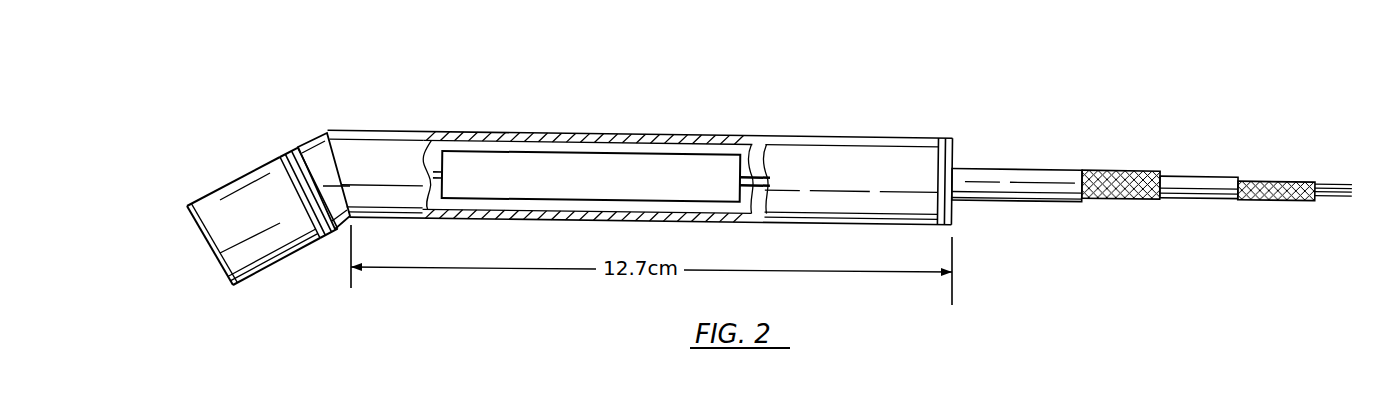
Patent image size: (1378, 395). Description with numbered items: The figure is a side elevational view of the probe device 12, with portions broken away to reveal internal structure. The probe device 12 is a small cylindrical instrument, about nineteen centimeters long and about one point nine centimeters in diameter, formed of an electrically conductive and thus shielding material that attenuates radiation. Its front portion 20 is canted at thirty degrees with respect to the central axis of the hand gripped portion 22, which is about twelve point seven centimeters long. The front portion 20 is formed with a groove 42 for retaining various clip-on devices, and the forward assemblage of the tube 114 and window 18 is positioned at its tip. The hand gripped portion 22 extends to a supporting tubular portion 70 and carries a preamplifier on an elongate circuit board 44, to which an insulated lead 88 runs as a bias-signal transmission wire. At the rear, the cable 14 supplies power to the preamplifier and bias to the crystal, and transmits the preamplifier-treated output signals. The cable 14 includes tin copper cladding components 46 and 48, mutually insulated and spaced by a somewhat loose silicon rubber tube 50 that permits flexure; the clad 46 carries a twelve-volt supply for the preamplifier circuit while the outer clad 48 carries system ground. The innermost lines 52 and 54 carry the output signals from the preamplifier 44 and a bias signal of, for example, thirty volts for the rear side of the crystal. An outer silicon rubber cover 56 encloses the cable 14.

The probe device 12 is at (903, 130).
The cable 14 is at (1133, 181).
The window 18 is at (227, 273).
The front portion 20 is at (272, 193).
The hand gripped portion 22 is at (698, 88).
The groove 42 is at (296, 147).
The preamplifier circuit board 44 is at (558, 168).
The tin copper cladding 46 is at (1276, 184).
The outer cladding 48 is at (1118, 173).
The silicon rubber tube 50 is at (1196, 198).
The innermost lead 52 is at (752, 134).
The innermost lead 54 is at (746, 224).
The outer silicon rubber cover 56 is at (1013, 180).
The supporting tubular portion 70 is at (318, 133).
The insulated lead 88 is at (433, 133).
The tube 114 is at (271, 263).